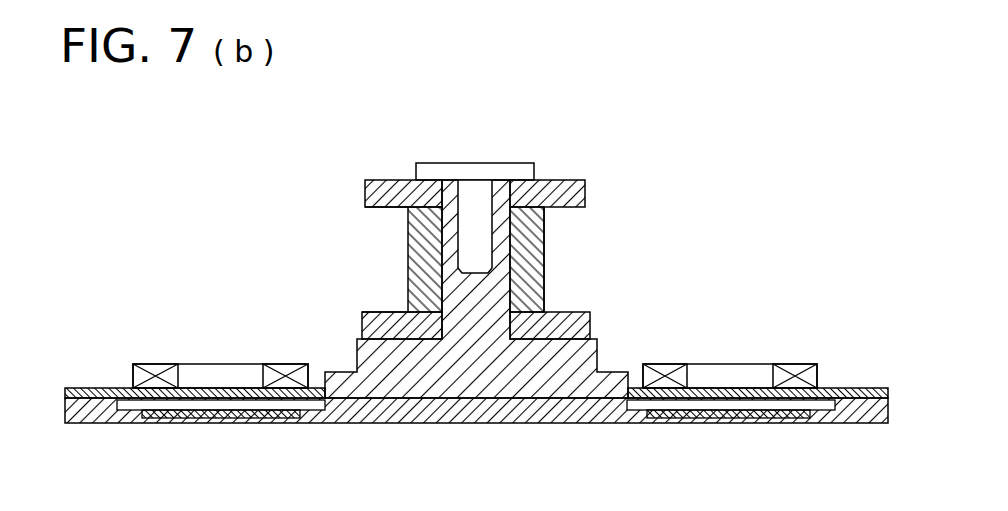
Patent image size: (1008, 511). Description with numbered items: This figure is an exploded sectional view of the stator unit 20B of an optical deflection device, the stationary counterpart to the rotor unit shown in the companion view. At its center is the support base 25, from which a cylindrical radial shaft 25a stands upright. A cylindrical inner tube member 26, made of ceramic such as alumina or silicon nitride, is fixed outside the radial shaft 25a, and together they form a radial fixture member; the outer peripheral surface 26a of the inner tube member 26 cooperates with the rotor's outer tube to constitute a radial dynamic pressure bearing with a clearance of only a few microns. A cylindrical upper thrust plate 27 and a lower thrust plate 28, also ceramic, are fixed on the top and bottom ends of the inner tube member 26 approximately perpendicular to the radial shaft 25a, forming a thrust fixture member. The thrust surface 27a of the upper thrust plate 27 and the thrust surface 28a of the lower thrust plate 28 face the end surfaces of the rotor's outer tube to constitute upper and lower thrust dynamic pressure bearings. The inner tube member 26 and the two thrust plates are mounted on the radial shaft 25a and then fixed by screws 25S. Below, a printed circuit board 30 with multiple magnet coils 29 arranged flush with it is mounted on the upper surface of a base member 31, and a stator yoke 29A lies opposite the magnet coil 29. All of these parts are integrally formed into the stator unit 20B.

The stator unit 20B is at (670, 166).
The support base 25 is at (476, 342).
The radial shaft 25a is at (510, 262).
The screws 25S is at (445, 163).
The inner tube member 26 is at (545, 228).
The outer peripheral surface 26a is at (545, 270).
The upper thrust plate 27 is at (564, 180).
The thrust surface 27a is at (383, 207).
The lower thrust plate 28 is at (362, 326).
The thrust surface 28a is at (381, 312).
The magnet coil 29 is at (793, 364).
The stator yoke 29A is at (718, 423).
The printed circuit board 30 is at (851, 388).
The base member 31 is at (848, 423).